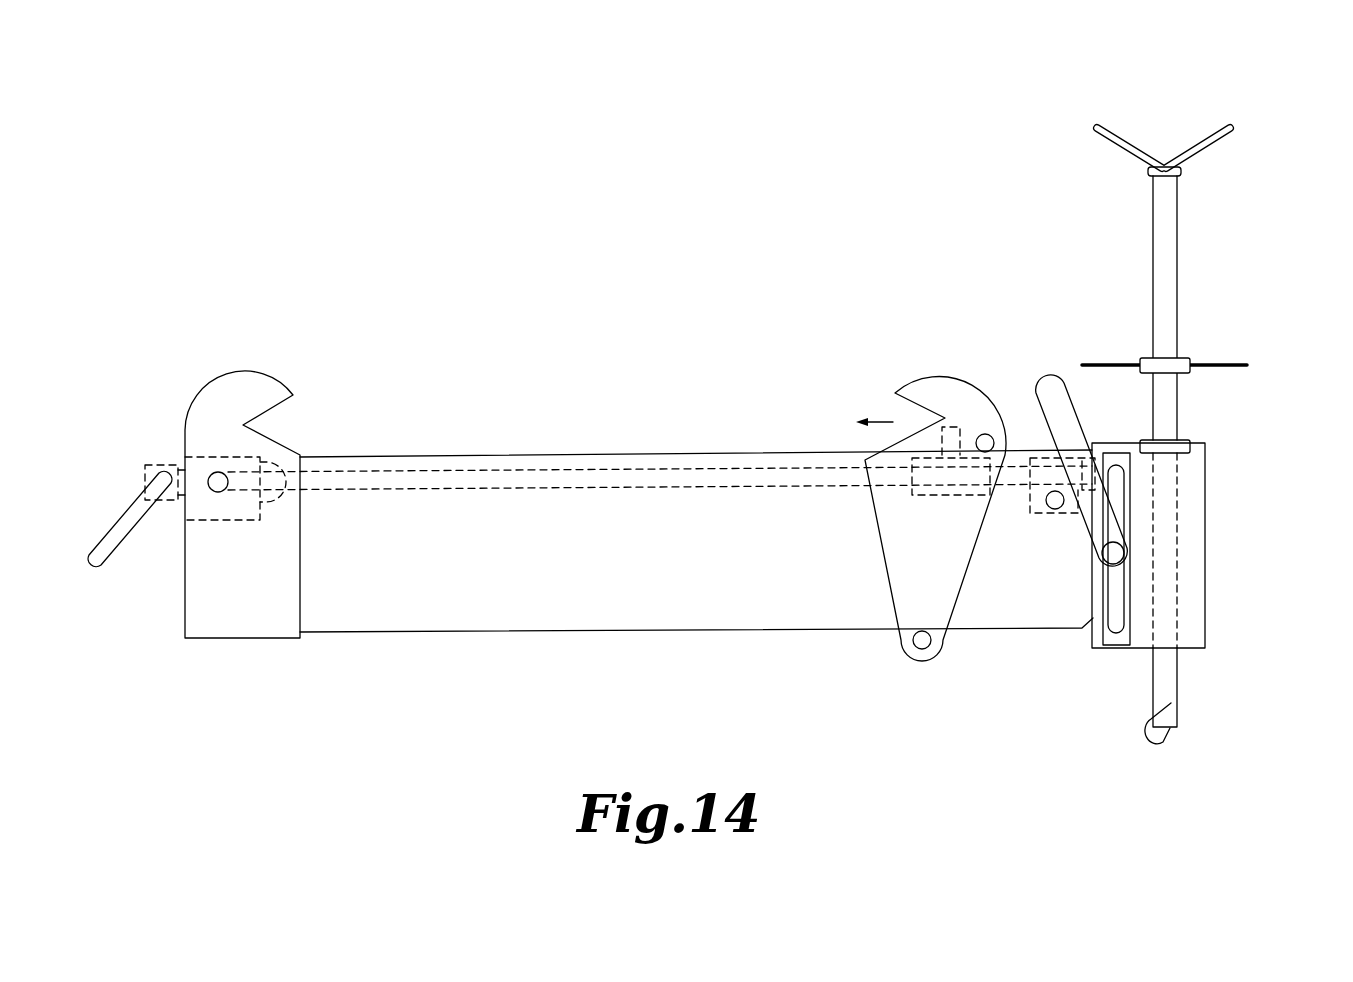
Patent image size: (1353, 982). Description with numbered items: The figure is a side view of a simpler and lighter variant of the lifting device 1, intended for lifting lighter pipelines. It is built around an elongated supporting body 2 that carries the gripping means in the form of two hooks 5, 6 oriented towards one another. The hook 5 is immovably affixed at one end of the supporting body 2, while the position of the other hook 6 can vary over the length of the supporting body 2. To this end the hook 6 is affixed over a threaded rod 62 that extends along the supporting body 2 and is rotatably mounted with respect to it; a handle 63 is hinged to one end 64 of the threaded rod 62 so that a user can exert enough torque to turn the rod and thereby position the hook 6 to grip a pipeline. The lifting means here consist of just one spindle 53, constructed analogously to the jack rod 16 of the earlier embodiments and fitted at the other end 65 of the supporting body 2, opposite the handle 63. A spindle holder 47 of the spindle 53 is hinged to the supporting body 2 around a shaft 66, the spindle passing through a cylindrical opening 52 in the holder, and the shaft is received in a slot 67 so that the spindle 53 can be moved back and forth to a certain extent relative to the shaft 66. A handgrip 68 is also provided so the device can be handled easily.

The lifting device 1 is at (1248, 80).
The supporting body 2 is at (696, 541).
The hook 5 is at (240, 400).
The hook 6 is at (943, 400).
The jack rod 16 is at (1165, 213).
The spindle holder 47 is at (1193, 468).
The cylindrical opening 52 is at (1178, 633).
The spindle 53 is at (1235, 310).
The threaded rod 62 is at (623, 478).
The handle 63 is at (117, 535).
The end of the threaded rod 64 is at (157, 418).
The other end of the supporting body 65 is at (1222, 656).
The shaft 66 is at (1113, 553).
The slot 67 is at (1115, 605).
The handgrip 68 is at (1049, 400).